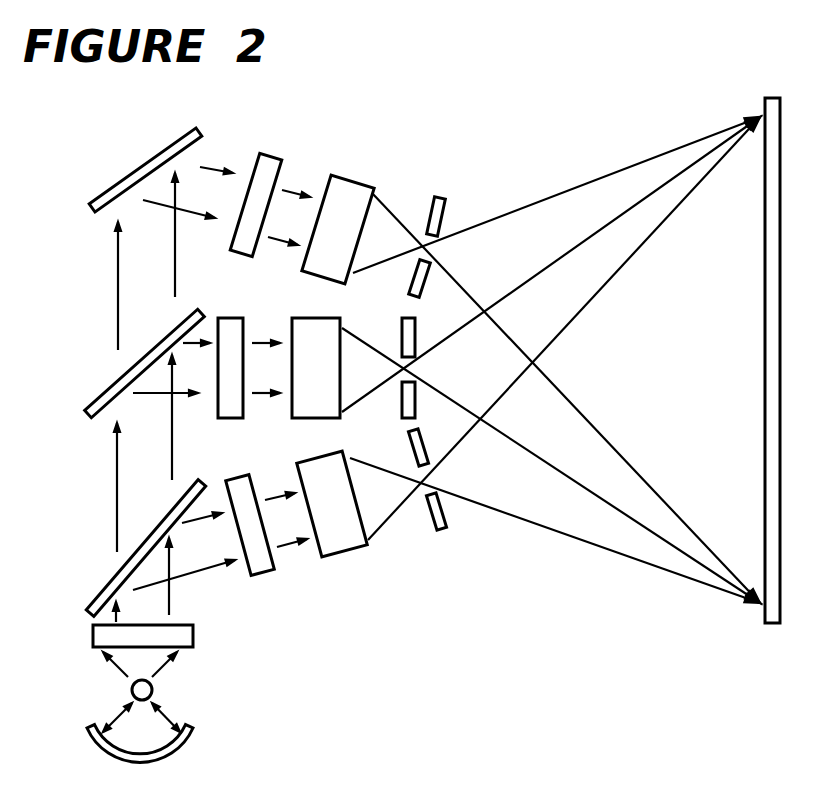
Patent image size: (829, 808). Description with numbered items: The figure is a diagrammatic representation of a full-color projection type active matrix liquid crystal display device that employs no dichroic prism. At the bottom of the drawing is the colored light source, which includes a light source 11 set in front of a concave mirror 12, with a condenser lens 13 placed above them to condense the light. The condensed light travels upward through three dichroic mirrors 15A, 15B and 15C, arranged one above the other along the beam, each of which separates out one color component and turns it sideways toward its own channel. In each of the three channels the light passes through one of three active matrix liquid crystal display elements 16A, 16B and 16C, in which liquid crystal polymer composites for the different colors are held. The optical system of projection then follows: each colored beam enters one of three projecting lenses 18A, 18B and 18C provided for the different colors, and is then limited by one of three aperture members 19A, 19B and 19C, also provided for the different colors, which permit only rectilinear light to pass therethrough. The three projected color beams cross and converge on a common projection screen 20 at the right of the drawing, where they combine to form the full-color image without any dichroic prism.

The light source 11 is at (153, 687).
The concave mirror 12 is at (185, 745).
The condenser lens 13 is at (93, 637).
The dichroic mirror 15A is at (133, 173).
The dichroic mirror 15B is at (88, 407).
The dichroic mirror 15C is at (97, 603).
The active matrix liquid crystal display element 16A is at (272, 153).
The active matrix liquid crystal display element 16B is at (217, 418).
The active matrix liquid crystal display element 16C is at (257, 573).
The projecting lens 18A is at (352, 195).
The projecting lens 18B is at (307, 420).
The projecting lens 18C is at (342, 547).
The aperture member 19A is at (440, 197).
The aperture member 19B is at (402, 407).
The aperture member 19C is at (440, 530).
The projection screen 20 is at (763, 613).